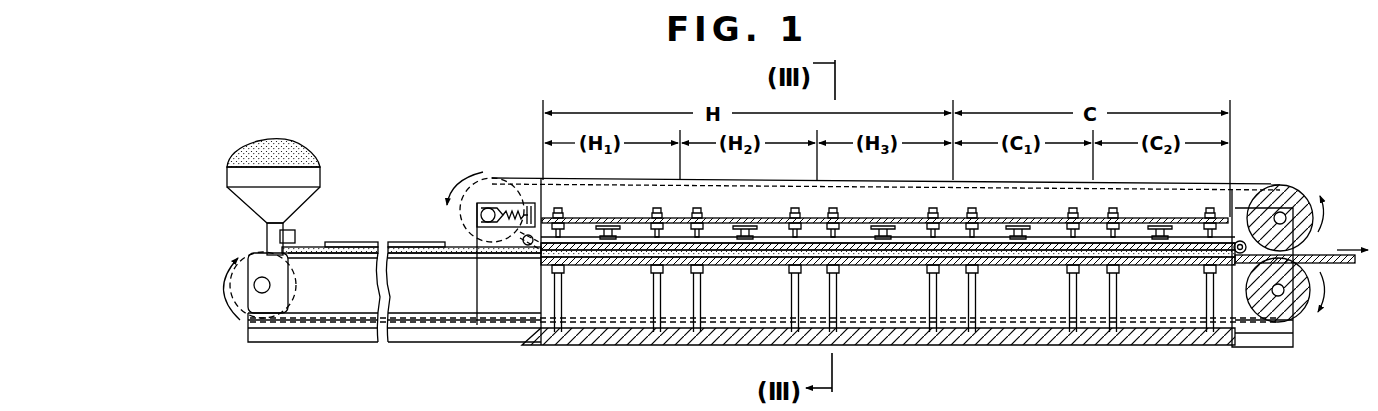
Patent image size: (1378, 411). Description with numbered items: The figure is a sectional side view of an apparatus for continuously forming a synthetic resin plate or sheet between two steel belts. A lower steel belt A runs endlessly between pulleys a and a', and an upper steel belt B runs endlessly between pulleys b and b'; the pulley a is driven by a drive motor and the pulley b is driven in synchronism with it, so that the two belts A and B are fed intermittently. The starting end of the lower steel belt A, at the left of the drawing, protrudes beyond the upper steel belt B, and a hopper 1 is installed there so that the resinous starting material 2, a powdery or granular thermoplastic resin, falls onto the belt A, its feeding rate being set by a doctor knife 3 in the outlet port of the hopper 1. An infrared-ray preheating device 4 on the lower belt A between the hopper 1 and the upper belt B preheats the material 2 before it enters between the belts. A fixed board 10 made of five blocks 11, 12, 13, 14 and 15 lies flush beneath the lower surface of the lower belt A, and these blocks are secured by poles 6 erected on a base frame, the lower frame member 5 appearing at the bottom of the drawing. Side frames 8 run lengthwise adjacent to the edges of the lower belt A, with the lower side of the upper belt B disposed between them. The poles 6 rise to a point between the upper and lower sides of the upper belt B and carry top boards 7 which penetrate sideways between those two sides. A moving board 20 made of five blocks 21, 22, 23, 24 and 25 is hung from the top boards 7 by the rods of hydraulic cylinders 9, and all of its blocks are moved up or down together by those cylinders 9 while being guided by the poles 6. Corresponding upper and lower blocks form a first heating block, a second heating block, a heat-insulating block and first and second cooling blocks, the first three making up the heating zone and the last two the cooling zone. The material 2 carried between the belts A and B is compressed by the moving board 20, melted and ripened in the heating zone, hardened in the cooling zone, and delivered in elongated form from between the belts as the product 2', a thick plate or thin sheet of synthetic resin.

The hopper 1 is at (298, 193).
The resinous starting material 2 is at (384, 207).
The product 2' is at (1301, 237).
The doctor knife 3 is at (287, 250).
The infrared-ray preheating device 4 is at (420, 241).
The base frame beam 5 is at (740, 346).
The poles 6 is at (1208, 304).
The top board 7 is at (780, 216).
The side frames 8 is at (575, 266).
The hydraulic cylinders 9 is at (1164, 224).
The fixed board 10 is at (990, 268).
The block 11 is at (631, 266).
The block 12 is at (740, 266).
The block 13 is at (882, 266).
The block 14 is at (1024, 266).
The block 15 is at (1148, 266).
The moving board 20 is at (864, 236).
The block 21 is at (640, 234).
The block 22 is at (722, 234).
The block 23 is at (914, 234).
The block 24 is at (984, 236).
The block 25 is at (1135, 234).
The lower steel belt A is at (896, 268).
The upper steel belt B is at (445, 343).
The pulley a is at (1285, 303).
The pulley b is at (1285, 199).
The pulley a' is at (254, 276).
The pulley b' is at (491, 191).